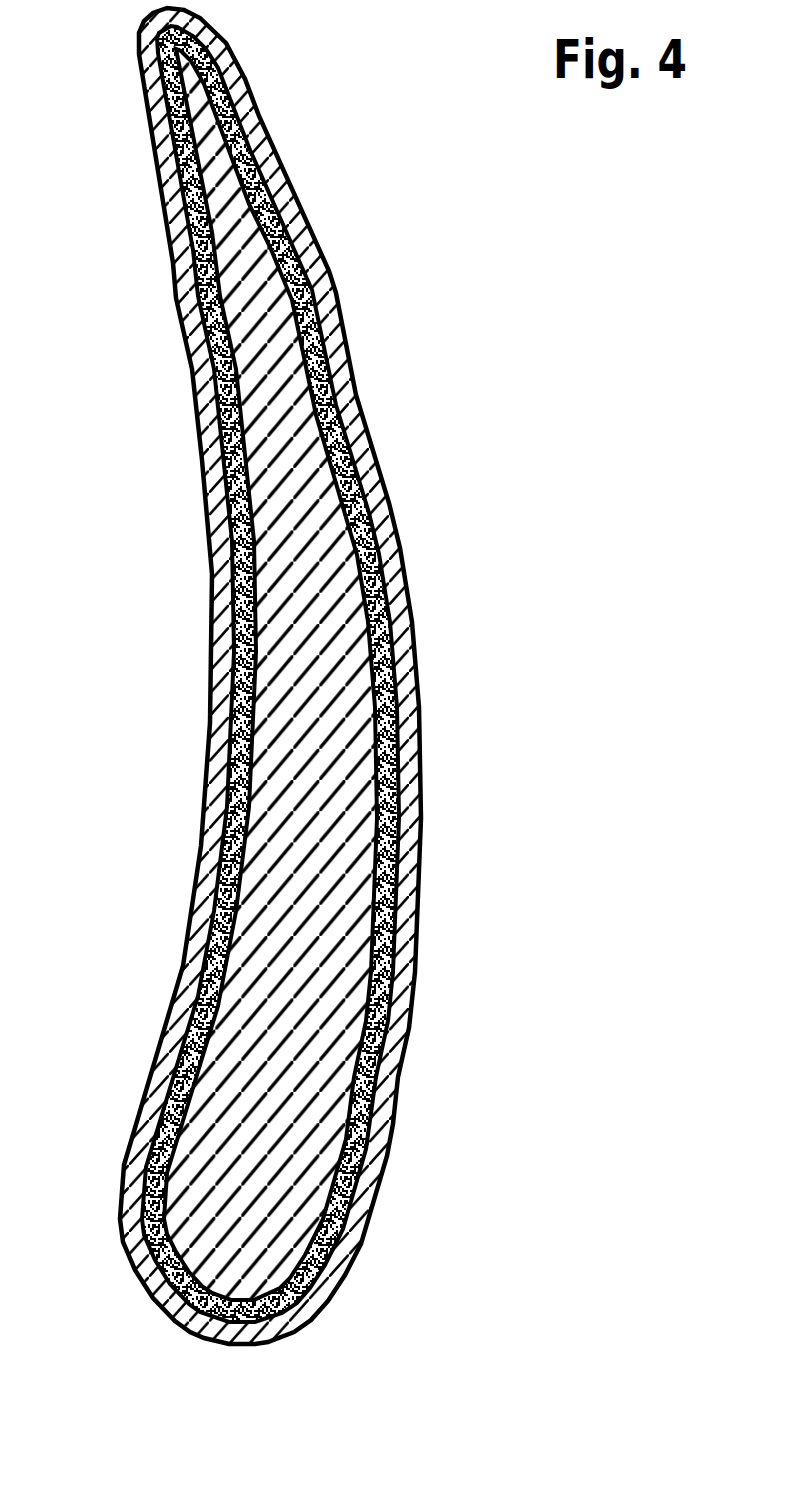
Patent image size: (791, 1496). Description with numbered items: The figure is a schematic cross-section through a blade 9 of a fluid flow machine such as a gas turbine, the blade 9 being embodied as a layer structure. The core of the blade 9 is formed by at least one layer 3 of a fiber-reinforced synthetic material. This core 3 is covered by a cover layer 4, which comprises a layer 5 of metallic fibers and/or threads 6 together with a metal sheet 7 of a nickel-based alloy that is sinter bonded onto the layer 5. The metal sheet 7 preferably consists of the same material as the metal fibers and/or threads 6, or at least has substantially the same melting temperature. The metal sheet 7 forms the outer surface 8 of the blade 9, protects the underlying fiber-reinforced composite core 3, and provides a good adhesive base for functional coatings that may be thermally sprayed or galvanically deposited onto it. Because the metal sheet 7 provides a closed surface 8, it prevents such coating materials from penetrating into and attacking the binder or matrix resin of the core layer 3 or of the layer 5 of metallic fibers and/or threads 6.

The layer of fiber-reinforced synthetic material 3 is at (267, 412).
The cover layer 4 is at (205, 533).
The layer of metallic fibers and/or threads 5 is at (237, 608).
The metallic fibers and/or threads 6 is at (240, 713).
The metal sheet 7 is at (220, 835).
The outer surface 8 is at (185, 953).
The blade 9 is at (442, 345).